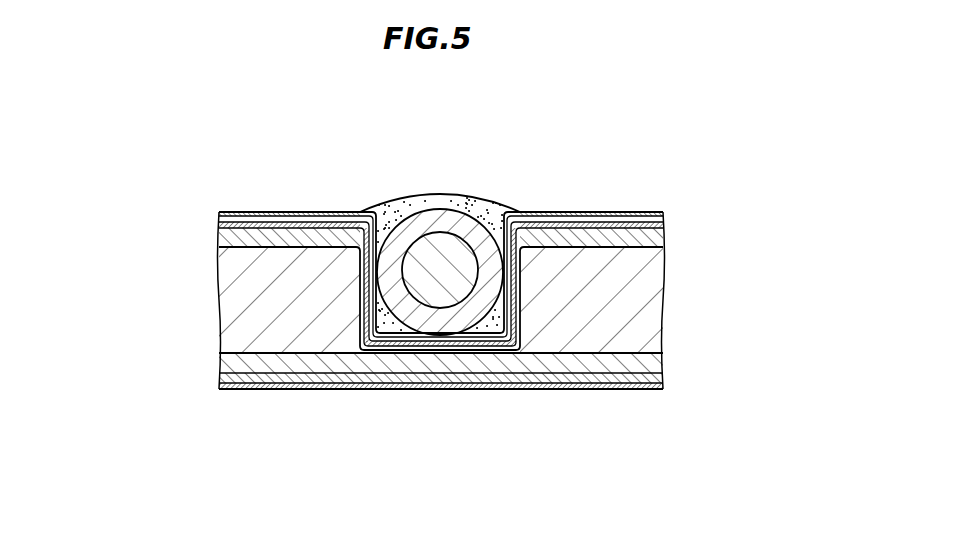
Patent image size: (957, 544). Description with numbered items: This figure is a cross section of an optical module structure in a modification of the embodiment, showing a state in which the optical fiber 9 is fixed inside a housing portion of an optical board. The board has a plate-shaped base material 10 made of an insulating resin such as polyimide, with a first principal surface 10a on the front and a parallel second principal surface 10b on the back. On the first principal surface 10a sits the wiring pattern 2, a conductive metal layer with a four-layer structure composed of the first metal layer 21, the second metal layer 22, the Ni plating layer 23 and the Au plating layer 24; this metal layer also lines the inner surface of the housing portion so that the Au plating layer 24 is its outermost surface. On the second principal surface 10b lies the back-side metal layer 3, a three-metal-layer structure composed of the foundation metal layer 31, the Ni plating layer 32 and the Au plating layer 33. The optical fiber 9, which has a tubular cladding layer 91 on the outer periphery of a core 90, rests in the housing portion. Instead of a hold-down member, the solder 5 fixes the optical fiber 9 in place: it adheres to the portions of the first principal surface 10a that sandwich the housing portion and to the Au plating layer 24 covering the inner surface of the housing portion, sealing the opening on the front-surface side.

The wiring pattern 2 is at (486, 259).
The back-side metal layer 3 is at (398, 370).
The solder 5 is at (447, 198).
The optical fiber 9 is at (442, 343).
The base material 10 is at (655, 305).
The first principal surface 10a is at (268, 245).
The second principal surface 10b is at (562, 353).
The first metal layer 21 is at (663, 237).
The second metal layer 22 is at (663, 226).
The Ni plating layer 23 is at (663, 219).
The Au plating layer 24 is at (727, 260).
The foundation metal layer 31 is at (220, 365).
The Ni plating layer 32 is at (220, 378).
The Au plating layer 33 is at (410, 395).
The core 90 is at (465, 287).
The cladding layer 91 is at (430, 323).